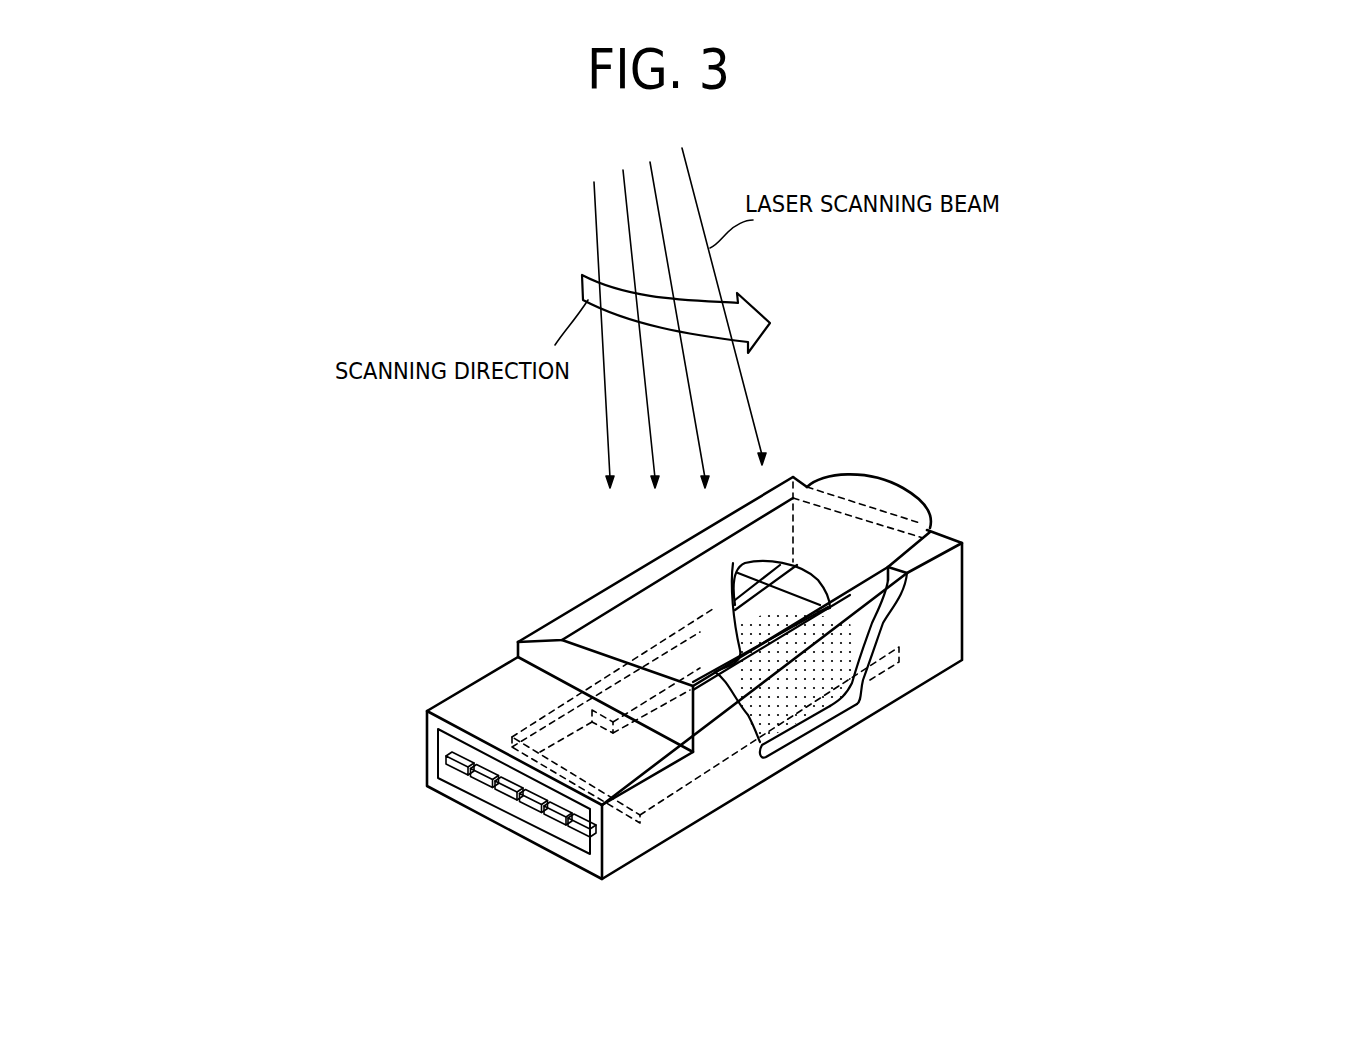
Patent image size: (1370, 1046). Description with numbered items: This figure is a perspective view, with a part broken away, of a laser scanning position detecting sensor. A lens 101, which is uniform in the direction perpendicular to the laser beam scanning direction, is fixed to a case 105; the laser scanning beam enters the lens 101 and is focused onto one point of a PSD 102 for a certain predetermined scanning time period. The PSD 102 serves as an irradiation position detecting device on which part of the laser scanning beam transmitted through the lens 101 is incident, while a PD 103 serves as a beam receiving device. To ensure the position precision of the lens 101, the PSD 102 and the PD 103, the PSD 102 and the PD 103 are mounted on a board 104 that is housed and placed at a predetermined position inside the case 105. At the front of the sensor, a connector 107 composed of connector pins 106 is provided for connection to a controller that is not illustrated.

The lens 101 is at (865, 478).
The PSD (position sensitive detector) 102 is at (806, 685).
The PD (photodiode) 103 is at (760, 624).
The board 104 is at (653, 790).
The case 105 is at (938, 608).
The connector pin 106 is at (563, 824).
The connector 107 is at (476, 786).